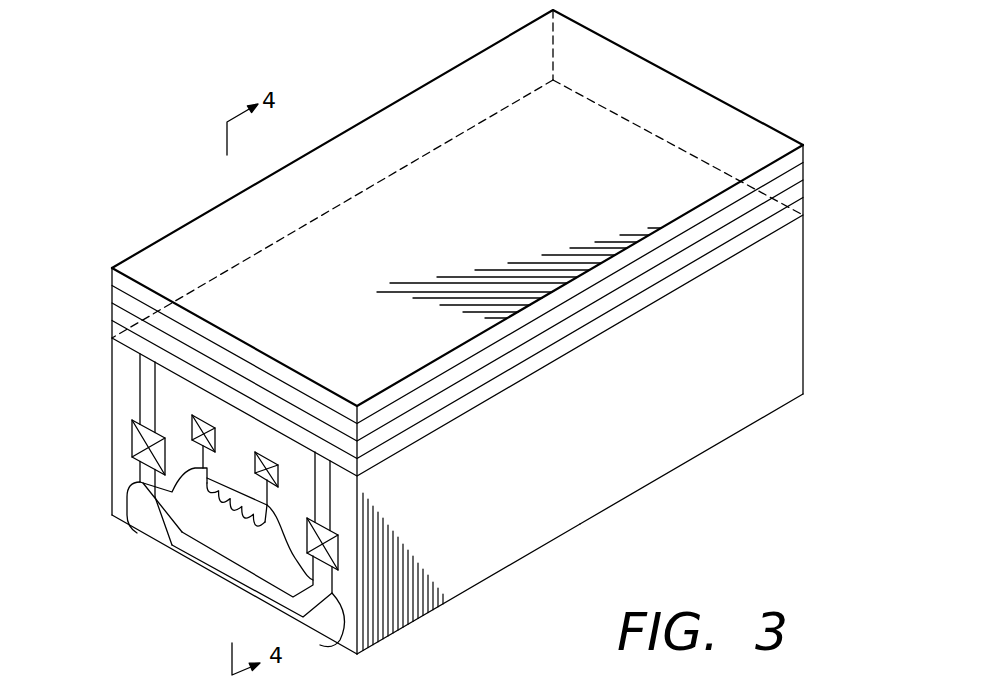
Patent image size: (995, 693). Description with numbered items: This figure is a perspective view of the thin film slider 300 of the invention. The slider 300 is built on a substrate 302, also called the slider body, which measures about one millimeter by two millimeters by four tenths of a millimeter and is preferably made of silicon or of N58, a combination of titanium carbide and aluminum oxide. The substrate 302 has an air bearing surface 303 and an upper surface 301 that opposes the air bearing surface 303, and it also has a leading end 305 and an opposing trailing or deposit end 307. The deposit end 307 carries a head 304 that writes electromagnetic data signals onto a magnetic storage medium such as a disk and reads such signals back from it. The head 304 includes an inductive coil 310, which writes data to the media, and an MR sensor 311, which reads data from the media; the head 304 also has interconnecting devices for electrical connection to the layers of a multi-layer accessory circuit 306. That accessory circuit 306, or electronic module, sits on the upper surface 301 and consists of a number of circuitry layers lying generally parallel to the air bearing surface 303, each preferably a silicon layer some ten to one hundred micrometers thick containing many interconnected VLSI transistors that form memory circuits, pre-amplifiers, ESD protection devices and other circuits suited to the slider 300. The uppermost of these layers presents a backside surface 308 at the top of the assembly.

The slider 300 is at (170, 117).
The upper surface 301 is at (620, 133).
The substrate 302 is at (676, 456).
The air bearing surface 303 is at (553, 497).
The head 304 is at (137, 533).
The leading end 305 is at (777, 297).
The multi-layer accessory circuit 306 is at (97, 263).
The deposit end 307 is at (123, 397).
The backside surface 308 is at (597, 47).
The inductive coil 310 is at (240, 510).
The MR sensor 311 is at (263, 593).